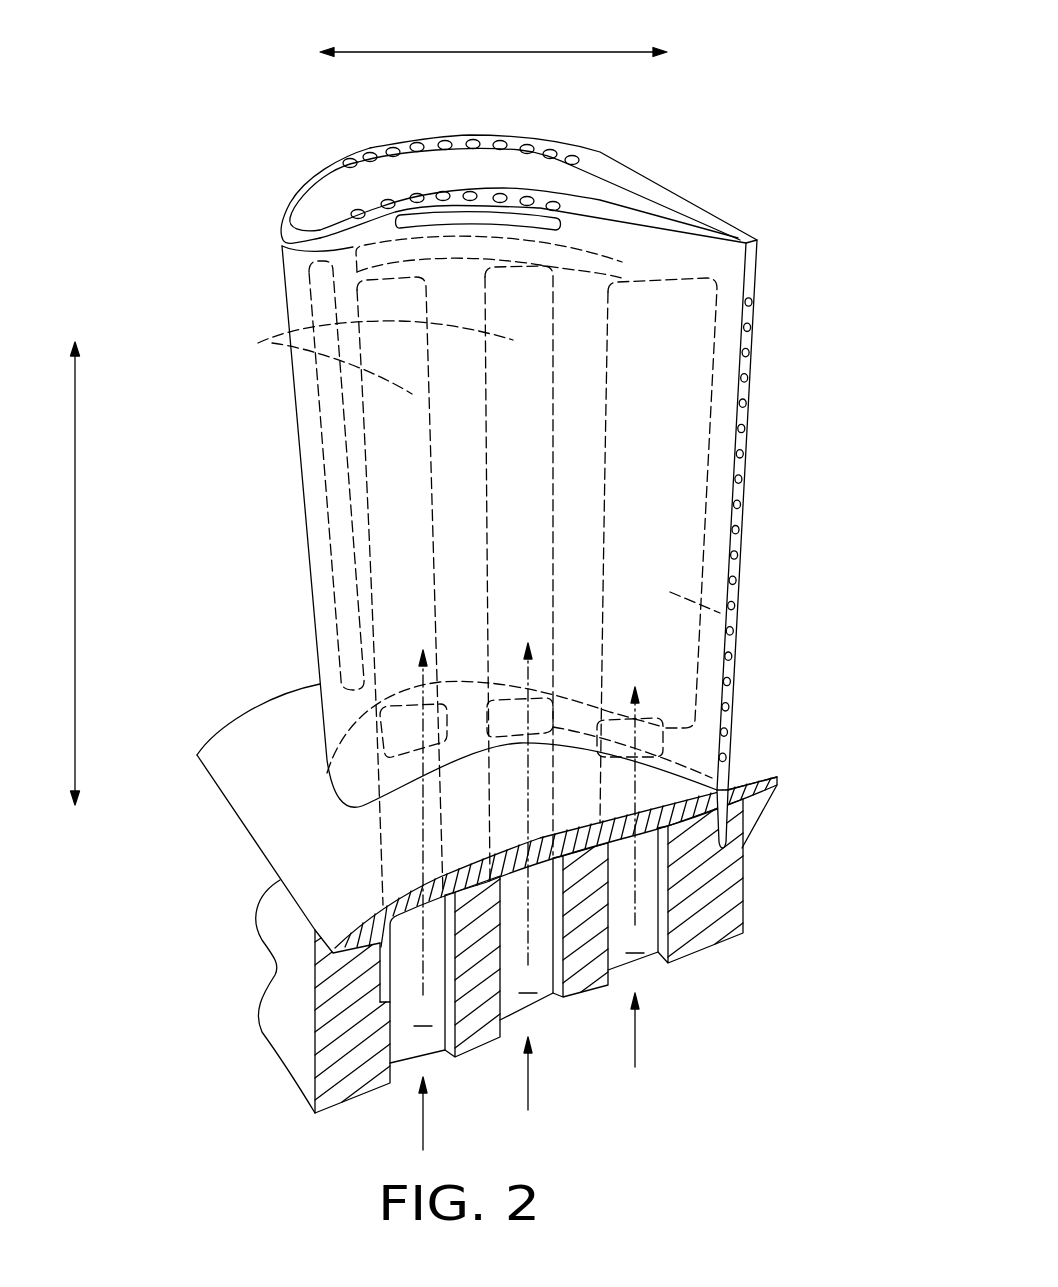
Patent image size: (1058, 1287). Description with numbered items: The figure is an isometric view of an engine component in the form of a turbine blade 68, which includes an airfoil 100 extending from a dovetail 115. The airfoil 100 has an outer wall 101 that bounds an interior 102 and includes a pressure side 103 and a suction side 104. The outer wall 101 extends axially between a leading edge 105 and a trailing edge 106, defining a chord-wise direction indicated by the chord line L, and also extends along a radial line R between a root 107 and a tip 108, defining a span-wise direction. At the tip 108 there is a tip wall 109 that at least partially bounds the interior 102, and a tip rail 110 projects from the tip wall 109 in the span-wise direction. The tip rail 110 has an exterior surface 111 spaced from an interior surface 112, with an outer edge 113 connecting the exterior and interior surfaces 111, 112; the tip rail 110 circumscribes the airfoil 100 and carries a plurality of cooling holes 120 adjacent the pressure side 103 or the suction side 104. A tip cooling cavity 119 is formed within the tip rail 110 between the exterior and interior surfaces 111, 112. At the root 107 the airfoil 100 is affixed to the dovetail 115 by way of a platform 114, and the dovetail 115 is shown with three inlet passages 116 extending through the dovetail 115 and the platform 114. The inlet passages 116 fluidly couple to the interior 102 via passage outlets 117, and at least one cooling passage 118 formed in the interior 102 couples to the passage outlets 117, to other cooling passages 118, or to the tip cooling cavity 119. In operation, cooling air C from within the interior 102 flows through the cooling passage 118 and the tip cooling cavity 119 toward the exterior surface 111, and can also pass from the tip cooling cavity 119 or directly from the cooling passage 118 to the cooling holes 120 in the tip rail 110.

The turbine blade 68 is at (246, 189).
The airfoil 100 is at (268, 421).
The outer wall 101 is at (331, 640).
The interior 102 is at (570, 352).
The pressure side 103 is at (719, 520).
The suction side 104 is at (762, 449).
The leading edge 105 is at (305, 513).
The trailing edge 106 is at (749, 410).
The root 107 is at (708, 728).
The tip 108 is at (751, 300).
The tip wall 109 is at (571, 197).
The tip rail 110 is at (337, 191).
The exterior surface 111 is at (684, 243).
The interior surface 112 is at (674, 210).
The outer edge 113 is at (361, 151).
The platform 114 is at (250, 736).
The dovetail 115 is at (293, 986).
The inlet passages 116 is at (425, 1130).
The passage outlets 117 is at (548, 691).
The cooling passage 118 is at (280, 341).
The tip cooling cavity 119 is at (336, 246).
The cooling holes 120 is at (416, 146).
The cooling air C is at (529, 977).
The radial line R is at (78, 596).
The chord line L is at (511, 52).